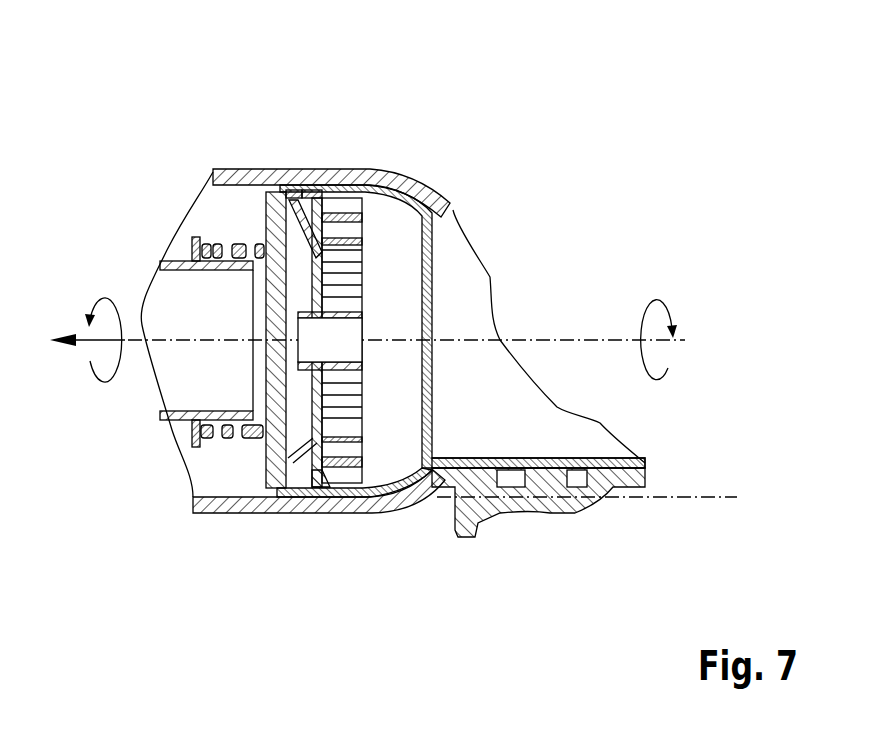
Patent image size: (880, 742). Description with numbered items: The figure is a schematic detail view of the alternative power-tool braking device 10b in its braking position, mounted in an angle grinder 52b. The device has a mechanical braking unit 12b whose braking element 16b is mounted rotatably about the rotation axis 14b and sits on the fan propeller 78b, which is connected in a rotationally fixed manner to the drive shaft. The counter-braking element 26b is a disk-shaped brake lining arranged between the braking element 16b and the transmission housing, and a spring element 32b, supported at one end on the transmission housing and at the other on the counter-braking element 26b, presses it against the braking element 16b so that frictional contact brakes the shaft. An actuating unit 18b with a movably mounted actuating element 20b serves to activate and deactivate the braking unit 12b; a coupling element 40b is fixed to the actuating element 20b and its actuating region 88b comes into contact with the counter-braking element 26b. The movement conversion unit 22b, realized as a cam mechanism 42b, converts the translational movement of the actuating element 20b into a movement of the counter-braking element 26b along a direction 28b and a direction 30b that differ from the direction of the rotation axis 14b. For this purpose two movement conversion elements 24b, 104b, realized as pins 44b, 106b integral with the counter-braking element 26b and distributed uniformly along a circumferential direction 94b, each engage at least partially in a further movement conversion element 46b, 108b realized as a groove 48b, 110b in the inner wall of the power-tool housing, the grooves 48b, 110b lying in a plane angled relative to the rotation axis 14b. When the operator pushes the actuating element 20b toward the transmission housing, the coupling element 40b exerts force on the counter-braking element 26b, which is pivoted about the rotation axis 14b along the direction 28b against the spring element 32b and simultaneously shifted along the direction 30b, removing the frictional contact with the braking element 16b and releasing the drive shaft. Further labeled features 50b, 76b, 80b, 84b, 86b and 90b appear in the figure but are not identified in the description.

The power-tool braking device 10b is at (165, 88).
The braking unit 12b is at (308, 146).
The rotation axis 14b is at (590, 340).
The braking element 16b is at (462, 284).
The housing cover 76b is at (327, 197).
The actuating unit 18b is at (617, 560).
The actuating element 20b is at (535, 518).
The movement conversion unit 22b is at (268, 548).
The movement conversion element 24b is at (348, 462).
The pin 44b is at (303, 490).
The counter-braking element 26b is at (285, 216).
The direction 28b is at (80, 350).
The direction 30b is at (100, 383).
The spring element 32b is at (200, 262).
The coupling element 40b is at (570, 458).
The cam mechanism 42b is at (292, 548).
The further movement conversion element 46b is at (286, 527).
The groove 48b is at (265, 513).
The drive region 50b is at (597, 168).
The angle grinder 52b is at (622, 190).
The fan propeller 78b is at (325, 236).
The secondary axis 80b is at (707, 497).
The inner housing wall 84b is at (350, 500).
The outer housing wall 86b is at (355, 160).
The actuating region 88b is at (320, 497).
The connecting web 90b is at (306, 194).
The circumferential direction 94b is at (648, 302).
The movement conversion element 104b is at (252, 130).
The pin 106b is at (290, 172).
The further movement conversion element 108b is at (203, 150).
The groove 110b is at (290, 178).